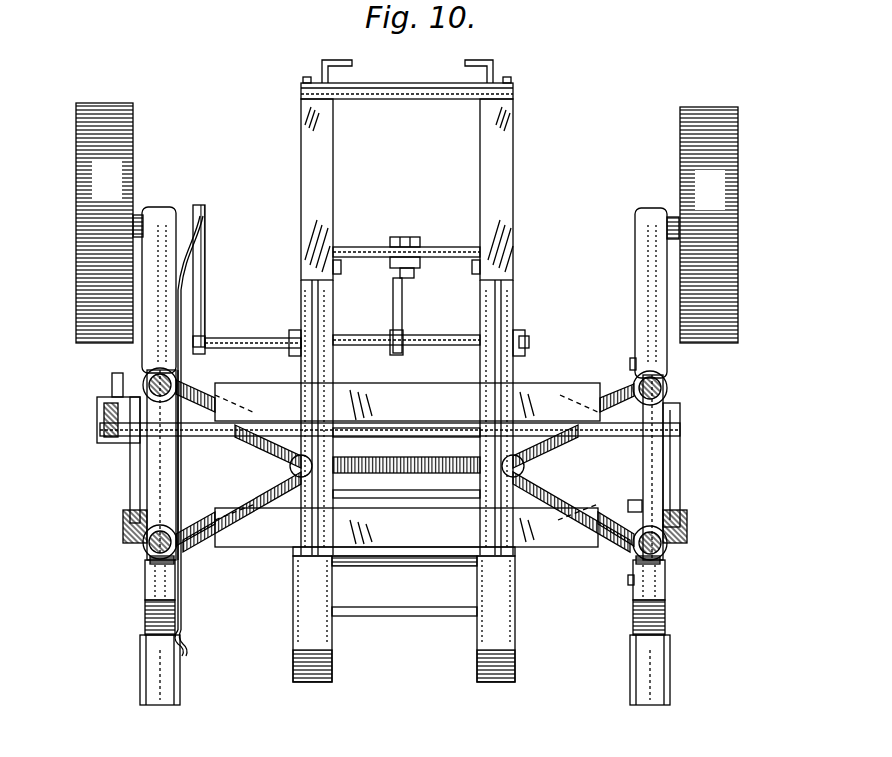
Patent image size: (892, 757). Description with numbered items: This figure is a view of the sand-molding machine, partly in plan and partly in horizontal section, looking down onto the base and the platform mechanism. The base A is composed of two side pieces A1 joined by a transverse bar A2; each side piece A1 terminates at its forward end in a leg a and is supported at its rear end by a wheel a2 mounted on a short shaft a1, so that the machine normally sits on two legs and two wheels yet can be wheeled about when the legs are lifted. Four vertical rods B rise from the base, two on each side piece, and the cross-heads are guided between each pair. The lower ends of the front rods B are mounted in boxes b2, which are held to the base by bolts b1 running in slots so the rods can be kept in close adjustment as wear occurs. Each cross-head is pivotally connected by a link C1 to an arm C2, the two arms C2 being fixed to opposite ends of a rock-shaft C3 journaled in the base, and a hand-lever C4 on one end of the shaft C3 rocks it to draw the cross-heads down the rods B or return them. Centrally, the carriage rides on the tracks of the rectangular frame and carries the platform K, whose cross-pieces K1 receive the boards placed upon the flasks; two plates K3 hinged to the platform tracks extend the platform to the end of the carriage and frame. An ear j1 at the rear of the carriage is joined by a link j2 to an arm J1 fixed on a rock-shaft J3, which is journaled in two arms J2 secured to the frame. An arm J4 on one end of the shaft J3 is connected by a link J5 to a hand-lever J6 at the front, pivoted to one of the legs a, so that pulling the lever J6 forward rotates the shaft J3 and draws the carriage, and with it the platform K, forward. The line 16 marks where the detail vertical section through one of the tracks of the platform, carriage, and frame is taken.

The wheel a2 is at (407, 223).
The short shaft a1 is at (140, 217).
The leg a is at (160, 706).
The base A is at (662, 372).
The side piece A1 is at (636, 297).
The transverse bar A2 is at (180, 570).
The vertical rod B is at (148, 379).
The bolt b1 is at (628, 506).
The box b2 is at (150, 560).
The link C1 is at (123, 521).
The arm C2 is at (130, 478).
The rock-shaft C3 is at (226, 437).
The hand-lever C4 is at (97, 410).
The arm J1 is at (404, 316).
The ear j1 is at (418, 240).
The link j2 is at (416, 272).
The arm J2 is at (292, 330).
The rock-shaft J3 is at (362, 338).
The arm J4 is at (206, 247).
The link J5 is at (182, 286).
The hand-lever J6 is at (188, 640).
The platform K is at (340, 445).
The cross-piece K1 is at (407, 465).
The plate K3 is at (320, 682).
The section line 16 is at (246, 494).